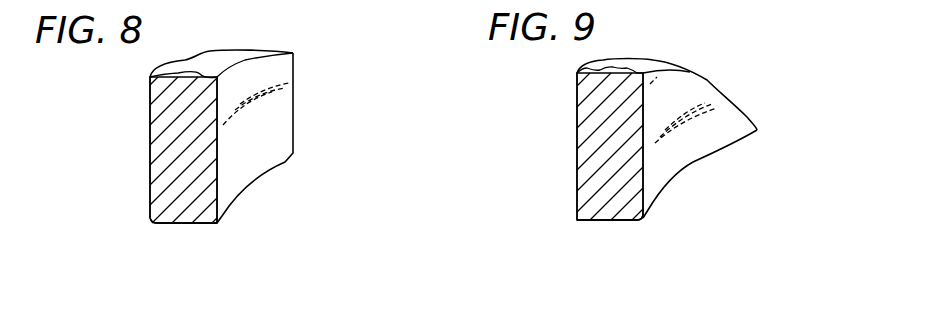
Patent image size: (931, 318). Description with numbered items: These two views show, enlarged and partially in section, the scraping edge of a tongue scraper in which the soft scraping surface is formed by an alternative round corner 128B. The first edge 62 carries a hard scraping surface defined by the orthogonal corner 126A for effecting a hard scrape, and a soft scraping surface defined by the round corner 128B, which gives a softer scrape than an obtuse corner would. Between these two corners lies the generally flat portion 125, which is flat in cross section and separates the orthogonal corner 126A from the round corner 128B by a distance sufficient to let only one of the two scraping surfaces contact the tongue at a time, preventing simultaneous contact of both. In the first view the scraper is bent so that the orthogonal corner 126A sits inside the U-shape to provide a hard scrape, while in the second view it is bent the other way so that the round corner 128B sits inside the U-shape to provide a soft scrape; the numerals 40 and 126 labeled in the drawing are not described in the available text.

In FIG. 8, the tooth / insert block 40 is at (305, 42).
In FIG. 9, the tooth / insert block 40 is at (553, 92).
In FIG. 8, the first edge 62 is at (165, 238).
In FIG. 9, the first edge 62 is at (623, 257).
In FIG. 8, the generally flat portion 125 is at (190, 224).
In FIG. 9, the generally flat portion 125 is at (620, 223).
In FIG. 9, the left side face 126 is at (577, 221).
In FIG. 8, the orthogonal corner 126A is at (217, 223).
In FIG. 8, the round corner 128B is at (157, 220).
In FIG. 9, the round corner 128B is at (643, 218).